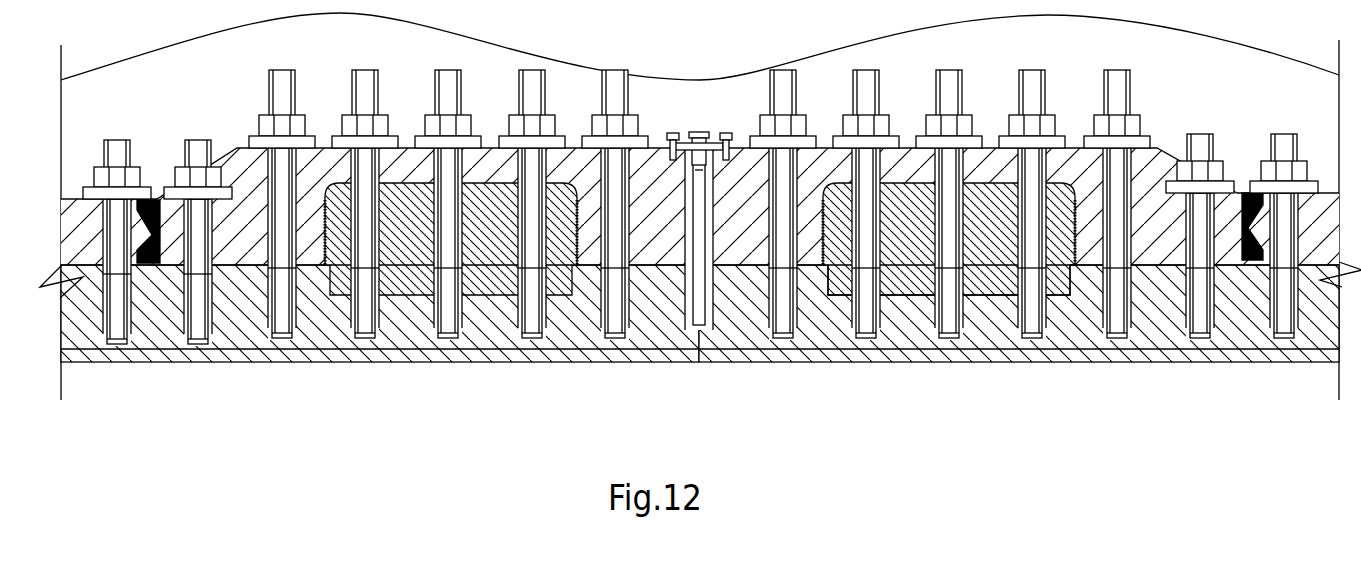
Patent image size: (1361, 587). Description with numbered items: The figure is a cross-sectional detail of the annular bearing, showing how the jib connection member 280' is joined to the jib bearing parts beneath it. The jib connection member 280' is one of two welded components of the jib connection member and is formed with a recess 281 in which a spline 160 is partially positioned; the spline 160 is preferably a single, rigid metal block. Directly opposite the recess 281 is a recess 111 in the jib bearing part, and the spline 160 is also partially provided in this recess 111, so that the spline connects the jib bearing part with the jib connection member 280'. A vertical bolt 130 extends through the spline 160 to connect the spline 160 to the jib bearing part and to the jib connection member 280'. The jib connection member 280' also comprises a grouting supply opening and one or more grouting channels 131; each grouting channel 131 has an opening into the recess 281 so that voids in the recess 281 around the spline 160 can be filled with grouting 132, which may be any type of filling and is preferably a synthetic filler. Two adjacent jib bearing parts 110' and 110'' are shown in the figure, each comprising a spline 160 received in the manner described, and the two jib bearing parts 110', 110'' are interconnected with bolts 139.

The recess 281 is at (905, 178).
The vertical bolt 130 is at (952, 92).
The grouting channel 131 is at (1060, 178).
The grouting 132 is at (1073, 235).
The jib connection member 280' is at (700, 169).
The bolt 139 is at (725, 130).
The spline 160 is at (949, 239).
The jib bearing part 110'' is at (380, 350).
The jib bearing part 110' is at (1019, 353).
The recess 111 is at (1065, 290).